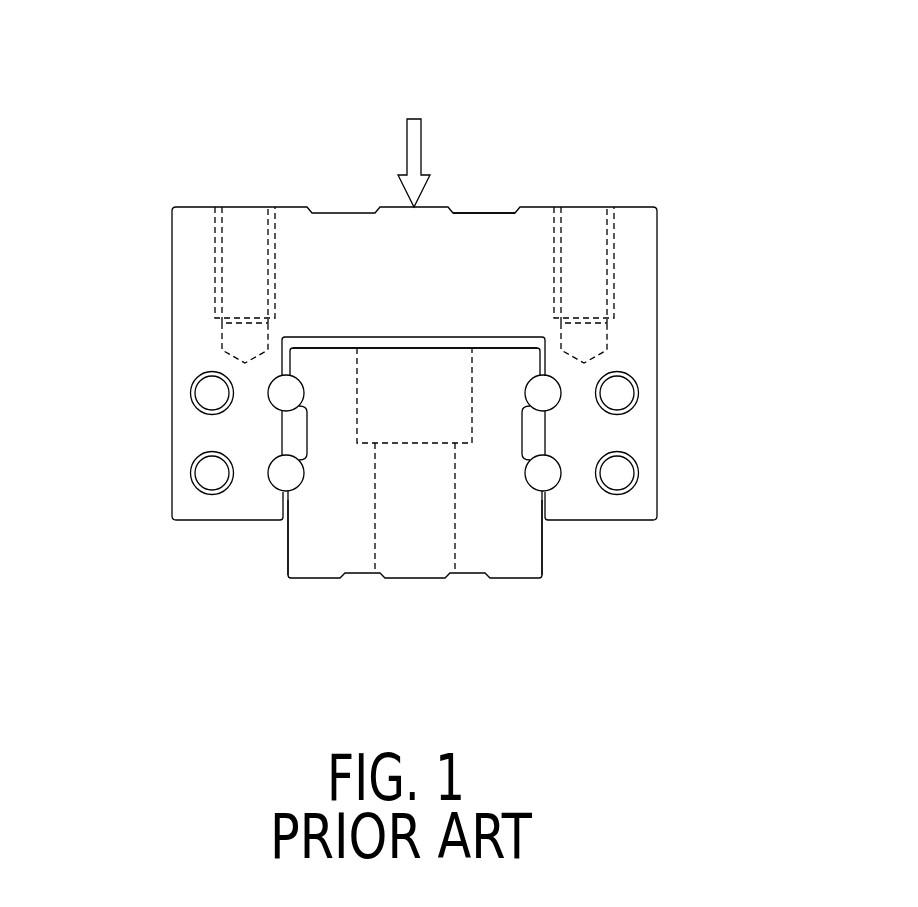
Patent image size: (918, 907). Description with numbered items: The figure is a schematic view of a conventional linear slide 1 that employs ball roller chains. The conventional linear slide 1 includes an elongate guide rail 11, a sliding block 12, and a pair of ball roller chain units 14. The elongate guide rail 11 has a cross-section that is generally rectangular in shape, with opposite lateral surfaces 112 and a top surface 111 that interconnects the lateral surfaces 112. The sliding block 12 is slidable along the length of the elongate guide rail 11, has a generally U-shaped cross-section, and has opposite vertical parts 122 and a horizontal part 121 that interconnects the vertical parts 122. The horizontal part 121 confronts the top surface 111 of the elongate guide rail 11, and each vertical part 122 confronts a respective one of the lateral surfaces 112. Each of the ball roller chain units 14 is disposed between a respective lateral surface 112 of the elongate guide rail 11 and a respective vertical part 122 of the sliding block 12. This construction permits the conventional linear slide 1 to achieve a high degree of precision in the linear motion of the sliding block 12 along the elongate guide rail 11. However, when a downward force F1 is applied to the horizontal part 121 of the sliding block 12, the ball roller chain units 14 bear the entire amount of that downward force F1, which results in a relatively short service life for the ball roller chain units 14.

The conventional linear slide 1 is at (552, 155).
The elongate guide rail 11 is at (477, 578).
The top surface 111 is at (325, 357).
The lateral surfaces 112 is at (290, 542).
The sliding block 12 is at (650, 332).
The horizontal part 121 is at (482, 213).
The vertical parts 122 is at (193, 430).
The ball roller chain units 14 is at (282, 485).
The downward force F1 is at (407, 147).